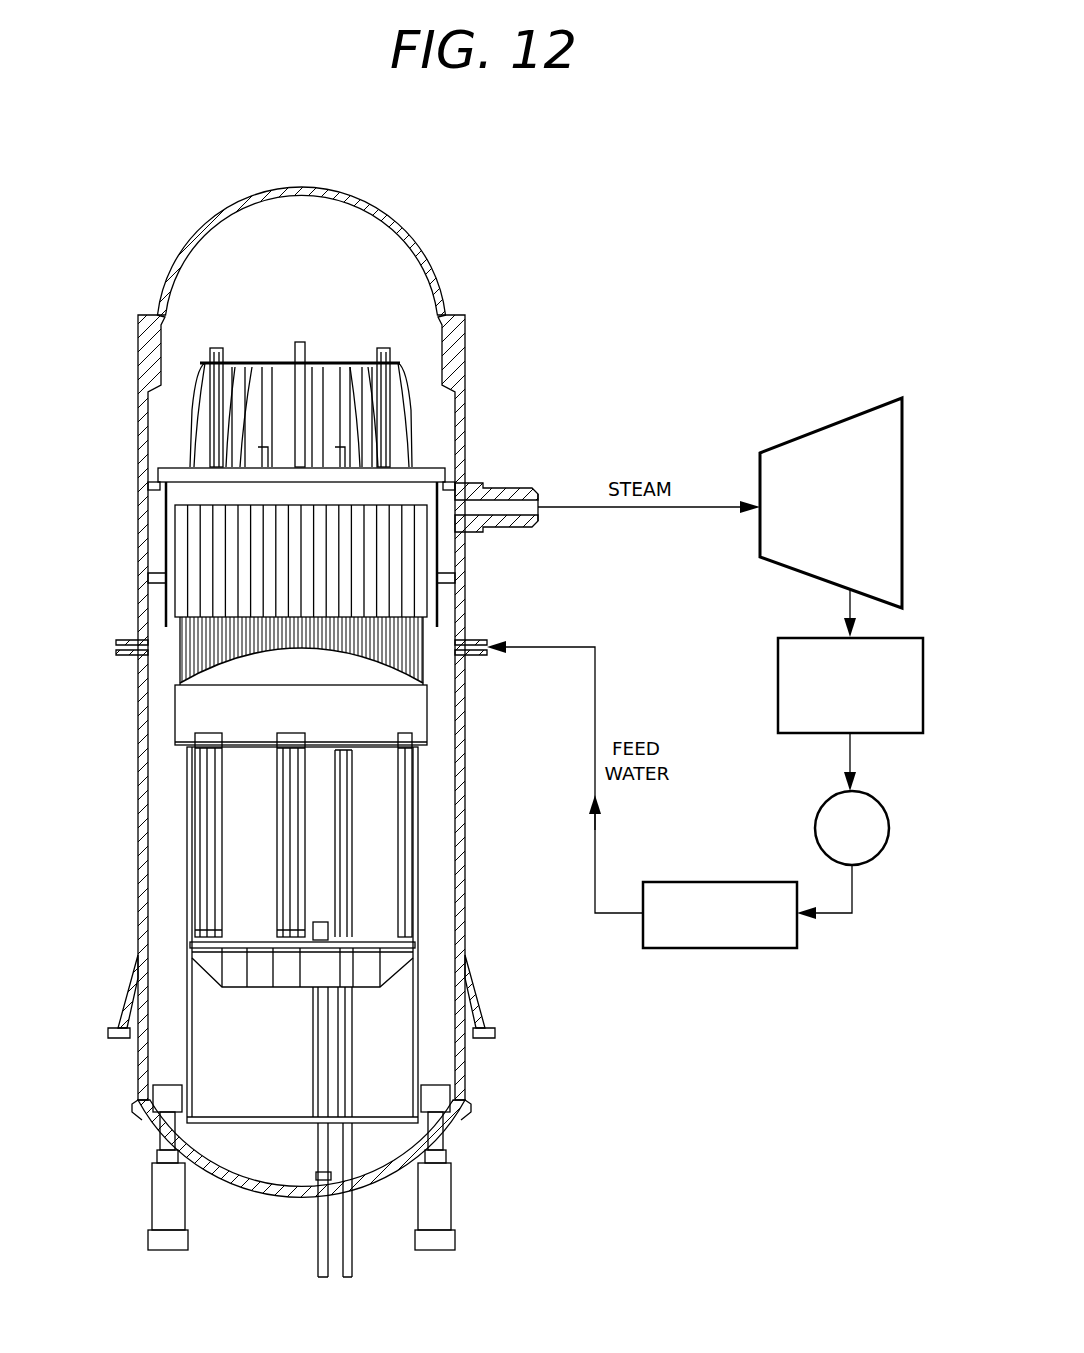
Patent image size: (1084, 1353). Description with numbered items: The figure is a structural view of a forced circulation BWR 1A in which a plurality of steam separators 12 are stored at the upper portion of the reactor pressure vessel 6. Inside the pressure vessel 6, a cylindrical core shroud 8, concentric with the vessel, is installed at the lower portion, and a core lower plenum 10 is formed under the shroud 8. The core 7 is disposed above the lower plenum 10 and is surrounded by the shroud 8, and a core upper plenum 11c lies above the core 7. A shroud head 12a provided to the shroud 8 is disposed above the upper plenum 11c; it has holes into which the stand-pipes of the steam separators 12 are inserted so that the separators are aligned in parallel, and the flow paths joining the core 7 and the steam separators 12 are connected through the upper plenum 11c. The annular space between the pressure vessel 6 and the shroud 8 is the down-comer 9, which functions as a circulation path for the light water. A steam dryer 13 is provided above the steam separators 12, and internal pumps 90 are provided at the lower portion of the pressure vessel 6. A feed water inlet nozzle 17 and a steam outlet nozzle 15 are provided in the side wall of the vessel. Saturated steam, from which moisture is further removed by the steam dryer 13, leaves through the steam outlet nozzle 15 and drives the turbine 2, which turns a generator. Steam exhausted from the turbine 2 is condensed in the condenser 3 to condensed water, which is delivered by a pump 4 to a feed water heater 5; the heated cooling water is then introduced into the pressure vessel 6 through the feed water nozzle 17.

The forced circulation BWR 1A is at (430, 192).
The turbine 2 is at (828, 426).
The condenser 3 is at (889, 733).
The feed water pump 4 is at (877, 858).
The feed water heater 5 is at (715, 882).
The reactor pressure vessel 6 is at (143, 837).
The core 7 is at (287, 810).
The core shroud 8 is at (415, 903).
The down-comer 9 is at (163, 911).
The core lower plenum 10 is at (383, 1043).
The core upper plenum 11c is at (413, 718).
The steam separator 12 is at (393, 515).
The shroud head 12a is at (352, 670).
The steam dryer 13 is at (372, 420).
The steam outlet nozzle 15 is at (500, 487).
The feed water inlet nozzle 17 is at (477, 637).
The internal pump 90 is at (447, 1198).